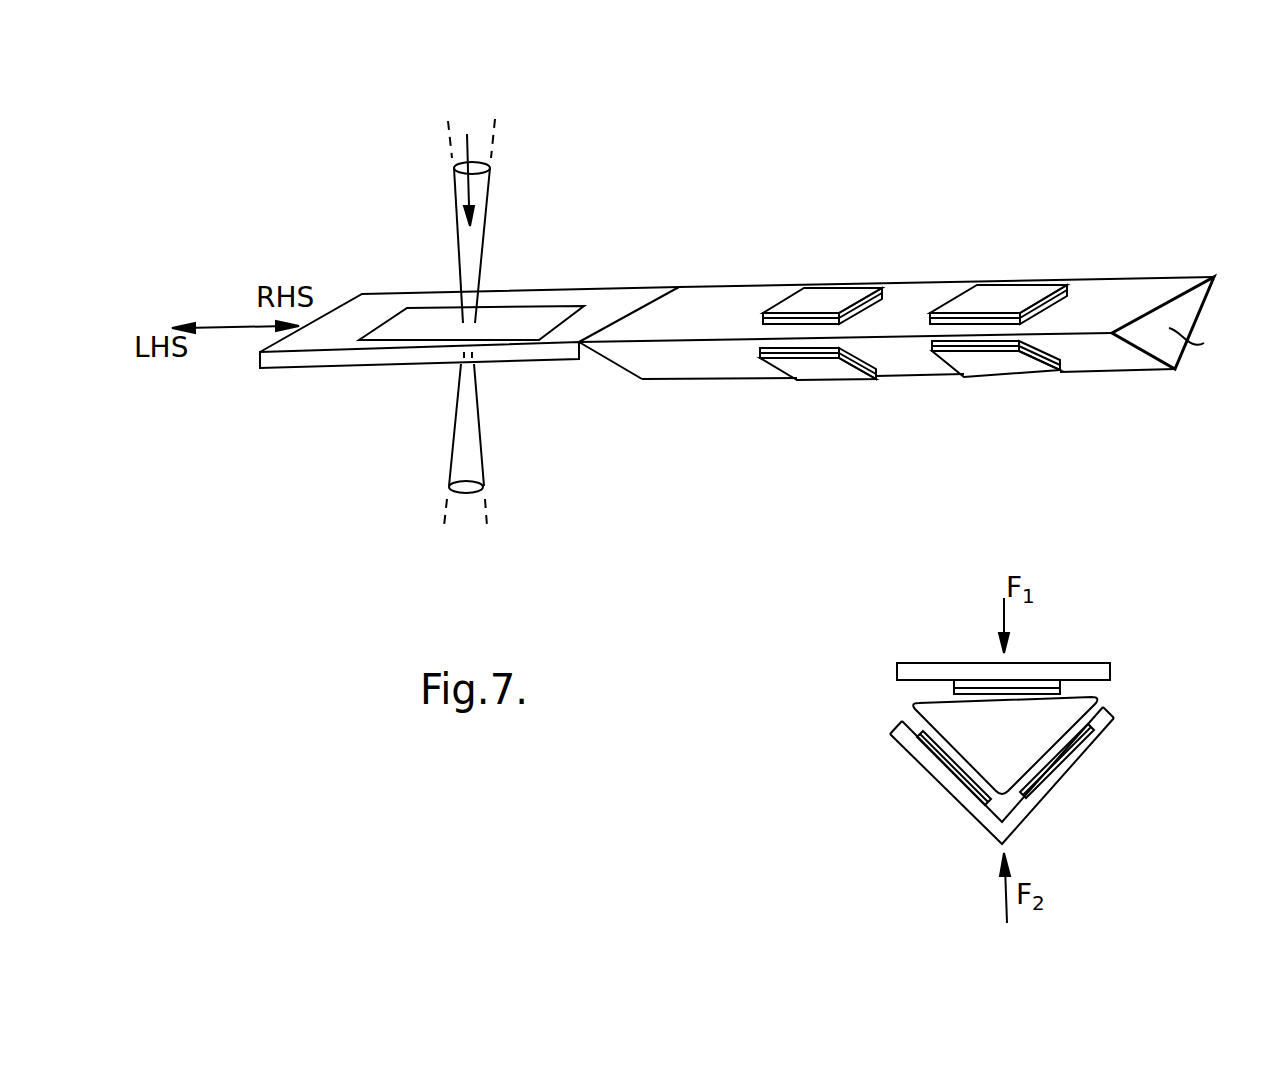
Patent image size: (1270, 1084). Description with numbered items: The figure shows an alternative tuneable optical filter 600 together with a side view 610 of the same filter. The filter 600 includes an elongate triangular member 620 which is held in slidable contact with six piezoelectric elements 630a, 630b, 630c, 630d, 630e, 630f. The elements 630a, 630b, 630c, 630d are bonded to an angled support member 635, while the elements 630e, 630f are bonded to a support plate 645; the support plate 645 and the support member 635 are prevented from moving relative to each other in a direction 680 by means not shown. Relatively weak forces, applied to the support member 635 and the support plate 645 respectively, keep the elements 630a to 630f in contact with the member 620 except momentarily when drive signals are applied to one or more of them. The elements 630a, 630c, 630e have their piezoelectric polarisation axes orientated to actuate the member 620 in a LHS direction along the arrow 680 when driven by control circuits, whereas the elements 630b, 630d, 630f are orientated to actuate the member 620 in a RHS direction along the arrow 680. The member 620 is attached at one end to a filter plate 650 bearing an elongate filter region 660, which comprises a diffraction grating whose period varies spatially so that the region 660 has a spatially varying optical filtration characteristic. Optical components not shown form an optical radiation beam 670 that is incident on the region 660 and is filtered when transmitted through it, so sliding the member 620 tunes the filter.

The tuneable optical filter 600 is at (1105, 193).
The side view of the filter 610 is at (1163, 608).
The elongate triangular member 620 is at (663, 350).
The piezoelectric element 630a is at (827, 293).
The piezoelectric element 630b is at (993, 297).
The piezoelectric element 630c is at (813, 357).
The piezoelectric element 630d is at (983, 357).
The piezoelectric element 630e is at (867, 350).
The piezoelectric element 630f is at (1047, 353).
The angled support member 635 is at (925, 758).
The support plate 645 is at (933, 668).
The filter plate 650 is at (332, 358).
The filter region 660 is at (547, 315).
The optical radiation beam 670 is at (475, 253).
The direction 680 is at (220, 327).